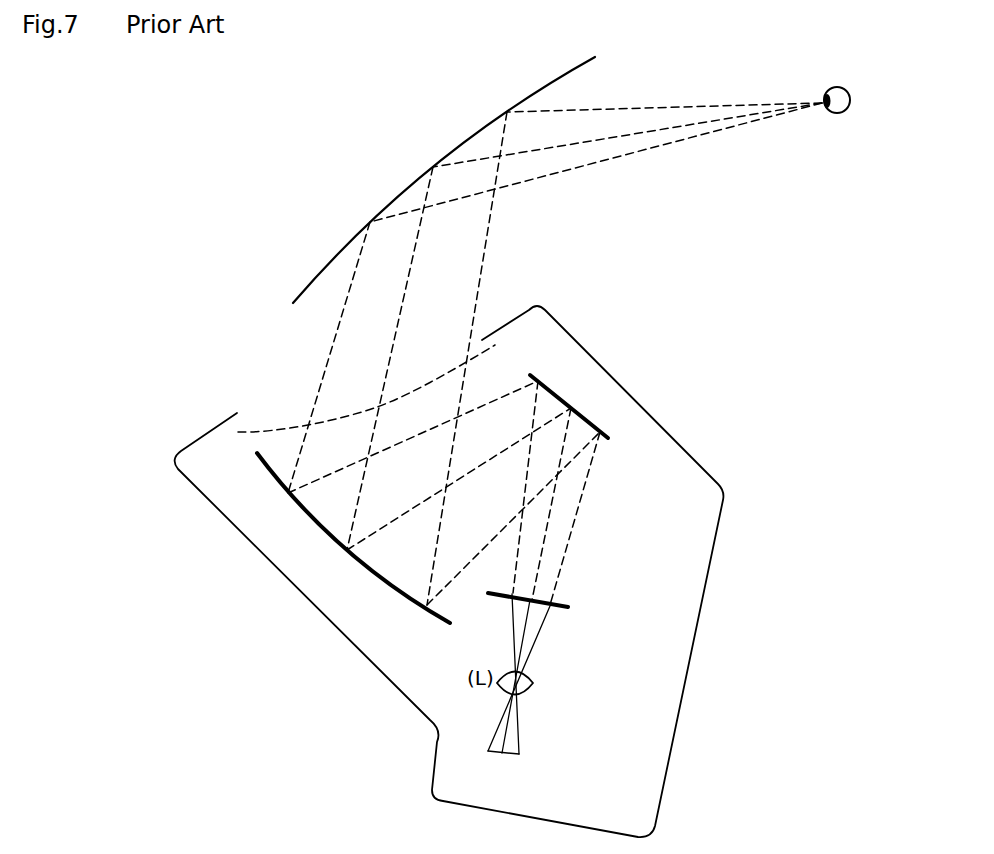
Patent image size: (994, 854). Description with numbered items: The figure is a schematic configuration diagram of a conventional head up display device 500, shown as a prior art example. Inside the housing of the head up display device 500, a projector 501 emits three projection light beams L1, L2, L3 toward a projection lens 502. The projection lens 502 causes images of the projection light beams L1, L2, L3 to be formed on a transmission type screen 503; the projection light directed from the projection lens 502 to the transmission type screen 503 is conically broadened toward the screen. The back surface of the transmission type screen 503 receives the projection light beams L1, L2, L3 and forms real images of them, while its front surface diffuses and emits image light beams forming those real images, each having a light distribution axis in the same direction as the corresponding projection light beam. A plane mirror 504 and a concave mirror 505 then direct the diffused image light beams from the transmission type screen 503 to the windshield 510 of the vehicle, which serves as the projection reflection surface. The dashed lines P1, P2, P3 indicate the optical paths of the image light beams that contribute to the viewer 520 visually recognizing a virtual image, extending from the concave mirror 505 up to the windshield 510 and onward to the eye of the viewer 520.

The head up display device 500 is at (578, 336).
The projector 501 is at (513, 757).
The projection lens 502 is at (533, 687).
The transmission type screen 503 is at (570, 601).
The plane mirror 504 is at (551, 390).
The concave mirror 505 is at (412, 607).
The windshield 510 is at (405, 190).
The viewer 520 is at (828, 90).
The optical path P1 is at (338, 328).
The optical path P2 is at (420, 247).
The optical path P3 is at (477, 298).
The projection light beam L1 is at (513, 623).
The projection light beam L2 is at (525, 633).
The projection light beam L3 is at (531, 651).